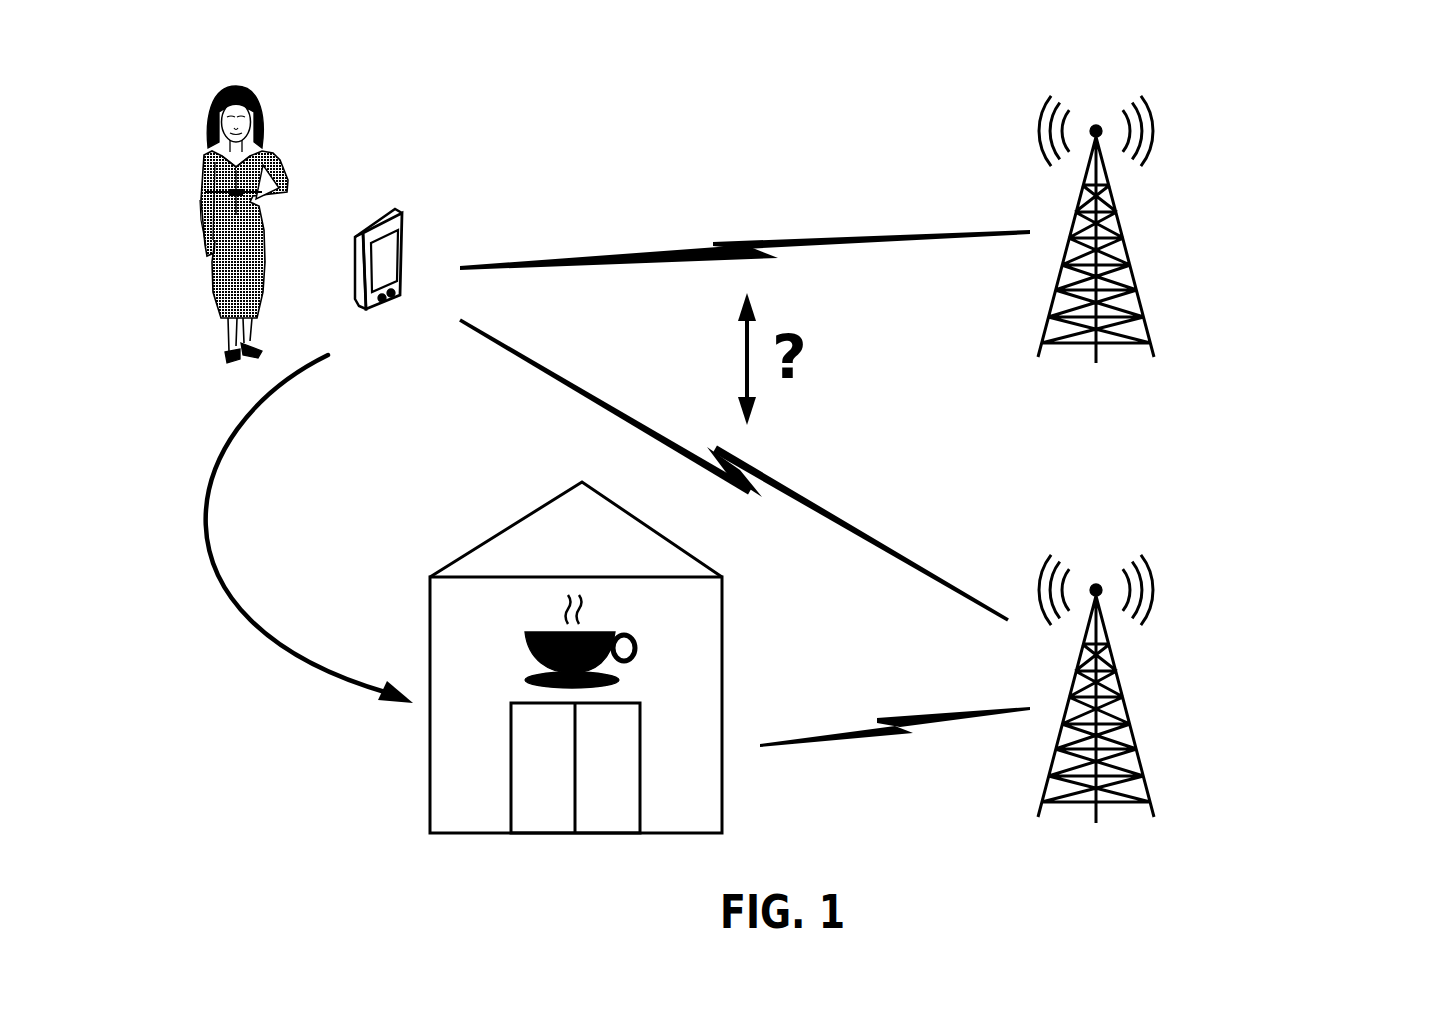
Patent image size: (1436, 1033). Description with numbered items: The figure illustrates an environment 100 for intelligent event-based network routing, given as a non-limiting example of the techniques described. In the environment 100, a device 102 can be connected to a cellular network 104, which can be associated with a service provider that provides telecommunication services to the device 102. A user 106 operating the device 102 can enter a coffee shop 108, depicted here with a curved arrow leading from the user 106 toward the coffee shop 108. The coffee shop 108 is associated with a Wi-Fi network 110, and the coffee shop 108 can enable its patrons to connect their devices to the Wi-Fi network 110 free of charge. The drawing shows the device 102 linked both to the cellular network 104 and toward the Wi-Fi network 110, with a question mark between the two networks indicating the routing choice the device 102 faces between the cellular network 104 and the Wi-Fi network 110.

The environment 100 is at (1259, 99).
The device 102 is at (443, 342).
The cellular network 104 is at (1297, 262).
The user 106 is at (287, 66).
The coffee shop 108 is at (665, 872).
The Wi-Fi network 110 is at (1295, 752).